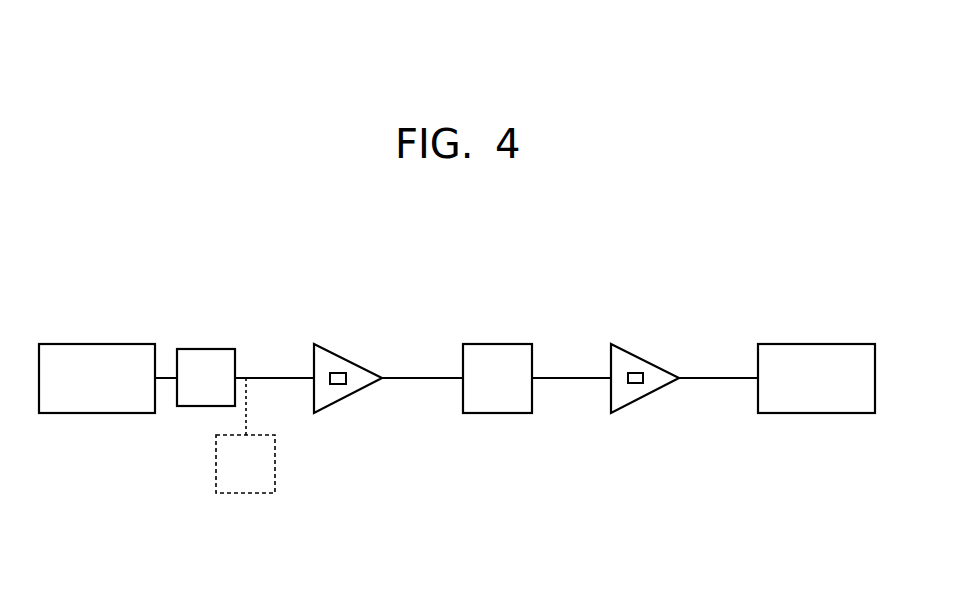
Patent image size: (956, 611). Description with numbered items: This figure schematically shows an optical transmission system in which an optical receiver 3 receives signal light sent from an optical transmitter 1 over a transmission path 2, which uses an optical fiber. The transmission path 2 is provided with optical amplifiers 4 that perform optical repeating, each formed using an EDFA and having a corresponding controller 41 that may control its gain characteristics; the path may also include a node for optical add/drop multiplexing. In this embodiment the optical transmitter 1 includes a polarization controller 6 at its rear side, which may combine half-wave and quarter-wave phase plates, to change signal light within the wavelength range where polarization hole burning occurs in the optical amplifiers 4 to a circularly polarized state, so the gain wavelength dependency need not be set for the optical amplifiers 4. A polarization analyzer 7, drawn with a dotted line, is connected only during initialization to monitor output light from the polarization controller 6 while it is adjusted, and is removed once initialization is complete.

The optical transmitter 1 is at (97, 343).
The transmission path 2 is at (417, 377).
The optical receiver 3 is at (815, 343).
The optical amplifier 4 is at (356, 380).
The controller 41 is at (339, 384).
The polarization controller 6 is at (212, 348).
The polarization analyzer 7 is at (246, 493).